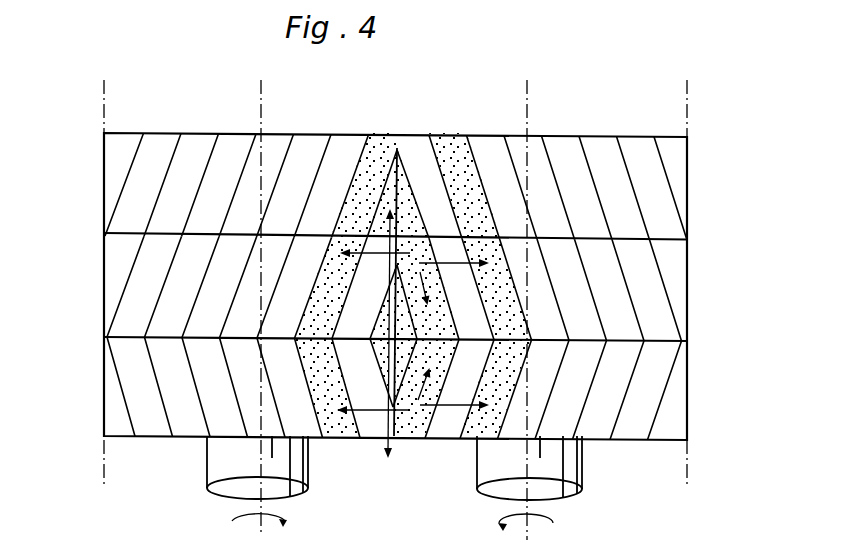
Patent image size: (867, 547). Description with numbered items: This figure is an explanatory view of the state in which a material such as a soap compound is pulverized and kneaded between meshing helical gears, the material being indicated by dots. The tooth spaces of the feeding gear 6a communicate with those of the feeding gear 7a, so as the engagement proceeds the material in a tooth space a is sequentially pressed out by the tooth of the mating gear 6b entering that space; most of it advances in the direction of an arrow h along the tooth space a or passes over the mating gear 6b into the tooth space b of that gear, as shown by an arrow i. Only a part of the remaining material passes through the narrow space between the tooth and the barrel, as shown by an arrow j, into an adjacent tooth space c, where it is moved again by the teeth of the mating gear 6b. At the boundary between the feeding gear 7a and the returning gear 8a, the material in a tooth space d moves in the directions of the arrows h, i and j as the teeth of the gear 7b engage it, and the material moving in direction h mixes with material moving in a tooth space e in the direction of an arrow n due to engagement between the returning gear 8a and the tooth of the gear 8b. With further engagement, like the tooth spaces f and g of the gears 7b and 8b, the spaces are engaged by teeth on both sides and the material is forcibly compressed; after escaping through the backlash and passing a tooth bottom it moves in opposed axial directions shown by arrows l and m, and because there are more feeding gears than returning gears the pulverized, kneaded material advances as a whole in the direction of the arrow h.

The feeding gear 6a is at (690, 181).
The mating gear 6b is at (112, 174).
The feeding gear 7a is at (690, 291).
The gear 7b is at (112, 283).
The returning gear 8a is at (690, 400).
The gear 8b is at (112, 396).
The tooth space a is at (414, 192).
The tooth space b is at (361, 182).
The adjacent tooth space c is at (458, 165).
The tooth space d is at (437, 312).
The tooth space e is at (410, 427).
The tooth space f is at (367, 322).
The tooth space g is at (377, 362).
The arrow h is at (425, 285).
The arrow i is at (387, 226).
The arrow j is at (447, 258).
The arrow l is at (347, 250).
The arrow m is at (387, 449).
The arrow n is at (433, 363).